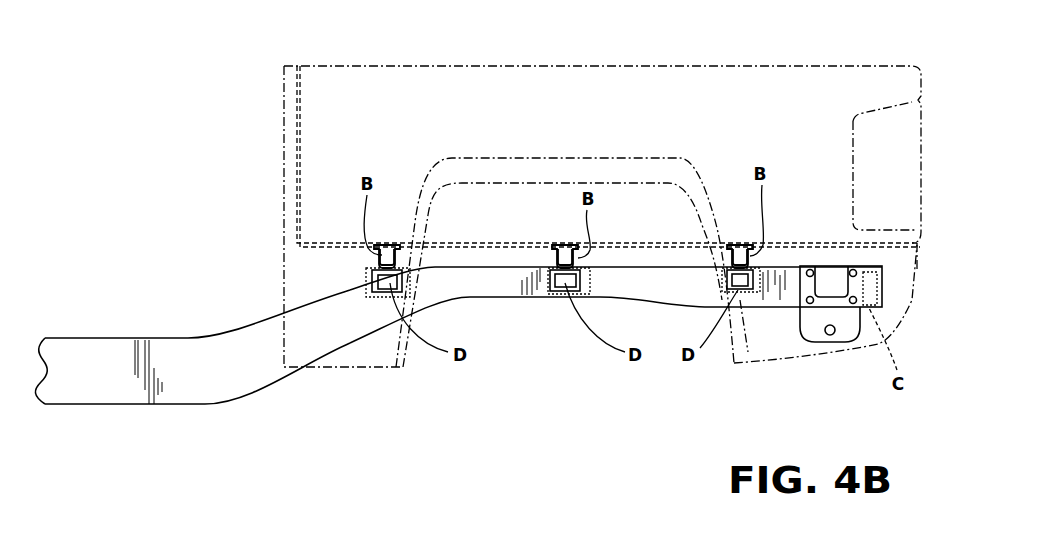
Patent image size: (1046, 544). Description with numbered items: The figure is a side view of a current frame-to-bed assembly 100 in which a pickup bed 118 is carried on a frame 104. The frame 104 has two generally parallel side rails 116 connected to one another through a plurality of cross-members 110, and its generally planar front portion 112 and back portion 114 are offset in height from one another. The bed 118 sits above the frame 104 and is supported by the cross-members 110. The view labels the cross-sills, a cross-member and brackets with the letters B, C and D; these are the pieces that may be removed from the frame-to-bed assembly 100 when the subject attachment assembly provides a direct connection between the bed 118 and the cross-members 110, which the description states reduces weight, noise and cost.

The frame-to-bed assembly 100 is at (183, 156).
The frame 104 is at (256, 397).
The cross-members 110 is at (370, 293).
The front portion 112 is at (78, 352).
The back portion 114 is at (882, 287).
The side rails 116 is at (307, 330).
The bed 118 is at (796, 243).